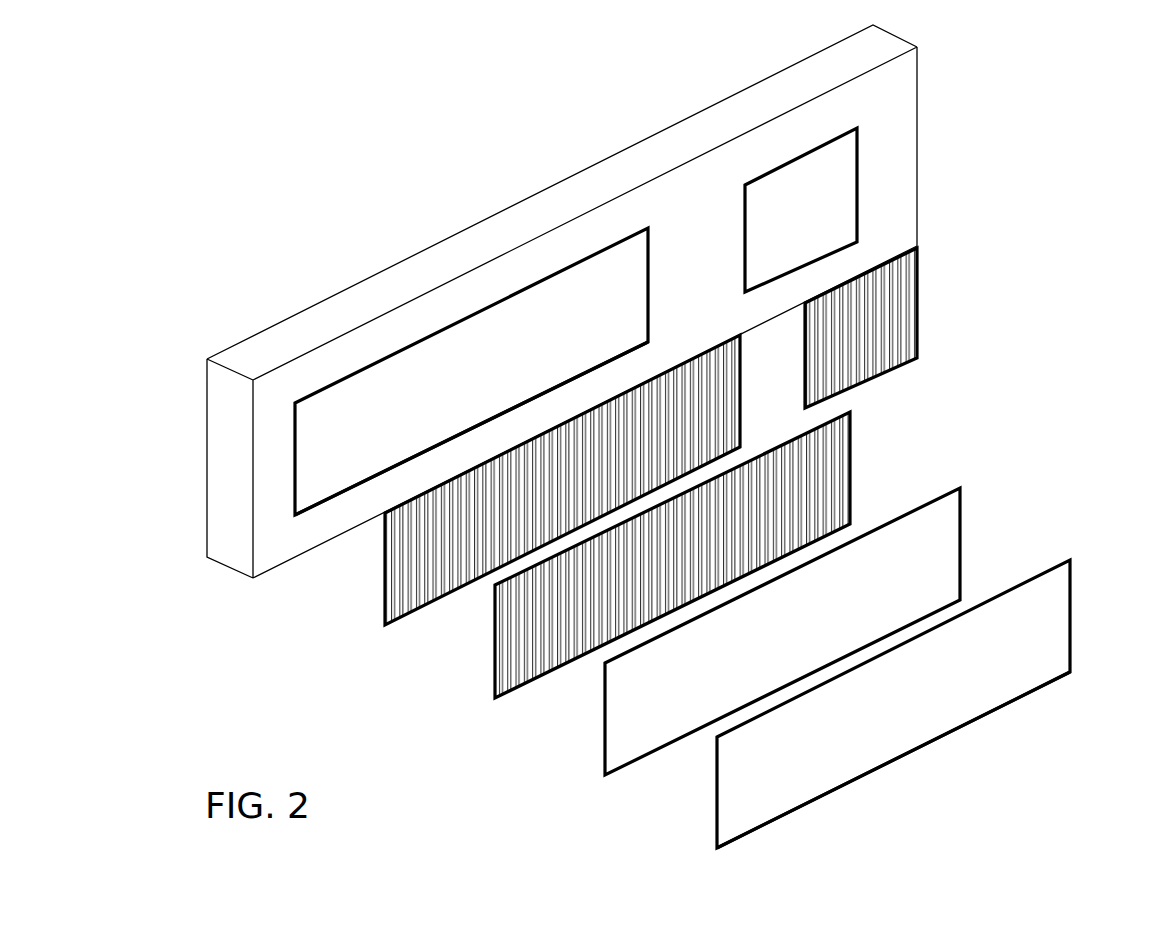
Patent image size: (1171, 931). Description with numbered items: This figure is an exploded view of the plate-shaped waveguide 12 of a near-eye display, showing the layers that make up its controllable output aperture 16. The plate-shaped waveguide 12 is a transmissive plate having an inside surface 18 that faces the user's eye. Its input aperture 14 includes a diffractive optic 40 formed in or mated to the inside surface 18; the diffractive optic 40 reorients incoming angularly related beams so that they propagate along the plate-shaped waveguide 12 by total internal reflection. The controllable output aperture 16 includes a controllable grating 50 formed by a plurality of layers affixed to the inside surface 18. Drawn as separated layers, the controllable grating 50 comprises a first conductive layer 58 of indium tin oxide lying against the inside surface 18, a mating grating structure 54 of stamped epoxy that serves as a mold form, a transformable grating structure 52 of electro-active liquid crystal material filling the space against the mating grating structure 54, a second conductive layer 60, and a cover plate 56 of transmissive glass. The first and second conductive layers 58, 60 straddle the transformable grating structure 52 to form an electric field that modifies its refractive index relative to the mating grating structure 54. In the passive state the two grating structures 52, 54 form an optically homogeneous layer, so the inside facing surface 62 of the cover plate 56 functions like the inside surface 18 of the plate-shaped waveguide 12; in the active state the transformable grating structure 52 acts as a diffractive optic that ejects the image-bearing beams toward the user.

The plate-shaped waveguide 12 is at (689, 122).
The input aperture 14 is at (849, 157).
The controllable output aperture 16 is at (337, 486).
The inside surface 18 is at (890, 198).
The diffractive optic 40 is at (890, 353).
The controllable grating 50 is at (733, 591).
The transformable grating structure 52 is at (490, 660).
The mating grating structure 54 is at (383, 594).
The cover plate 56 is at (1073, 617).
The first conductive layer 58 is at (633, 275).
The second conductive layer 60 is at (962, 520).
The inside facing surface 62 is at (878, 742).